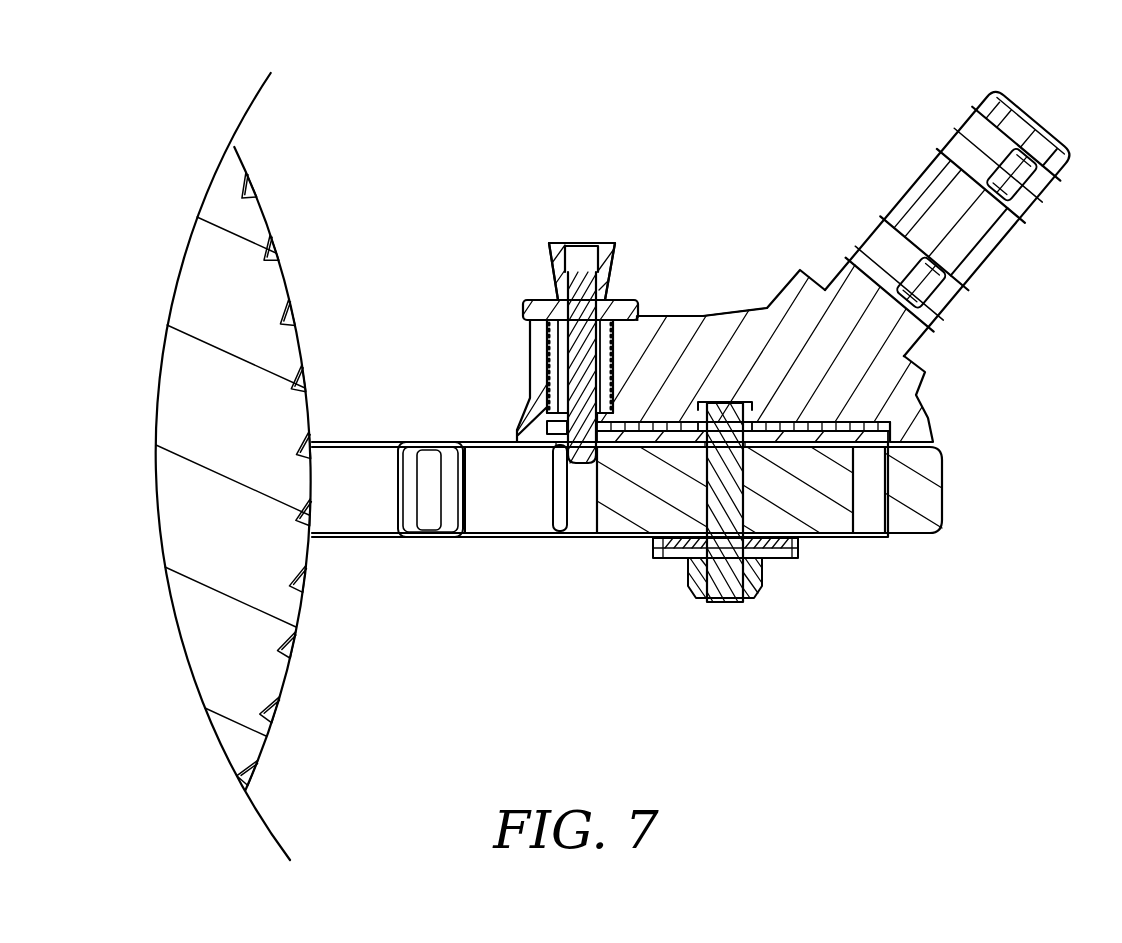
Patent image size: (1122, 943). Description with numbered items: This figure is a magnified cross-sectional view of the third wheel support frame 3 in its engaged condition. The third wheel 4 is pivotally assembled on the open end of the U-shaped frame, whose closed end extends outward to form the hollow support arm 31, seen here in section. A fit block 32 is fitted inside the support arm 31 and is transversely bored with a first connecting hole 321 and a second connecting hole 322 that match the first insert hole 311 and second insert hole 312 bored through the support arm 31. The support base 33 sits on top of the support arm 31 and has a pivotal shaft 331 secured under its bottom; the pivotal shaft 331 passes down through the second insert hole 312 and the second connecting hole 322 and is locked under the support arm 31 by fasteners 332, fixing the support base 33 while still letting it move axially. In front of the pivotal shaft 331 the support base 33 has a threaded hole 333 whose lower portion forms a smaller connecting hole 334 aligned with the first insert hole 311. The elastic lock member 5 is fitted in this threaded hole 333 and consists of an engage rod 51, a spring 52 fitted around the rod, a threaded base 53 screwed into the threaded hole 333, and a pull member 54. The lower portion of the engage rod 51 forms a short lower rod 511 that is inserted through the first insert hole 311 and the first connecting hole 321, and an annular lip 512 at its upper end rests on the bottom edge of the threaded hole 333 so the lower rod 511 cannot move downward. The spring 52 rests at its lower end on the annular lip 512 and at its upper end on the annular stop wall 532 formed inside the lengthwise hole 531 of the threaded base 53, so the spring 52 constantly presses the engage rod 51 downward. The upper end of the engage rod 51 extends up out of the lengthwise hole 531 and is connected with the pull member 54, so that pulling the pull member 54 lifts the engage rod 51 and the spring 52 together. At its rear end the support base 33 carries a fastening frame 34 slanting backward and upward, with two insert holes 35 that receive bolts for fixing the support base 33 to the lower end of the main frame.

The third wheel support frame 3 is at (1010, 317).
The third wheel 4 is at (241, 222).
The elastic lock member 5 is at (557, 220).
The support arm 31 is at (482, 442).
The fit block 32 is at (923, 488).
The support base 33 is at (800, 313).
The fastening frame 34 is at (937, 185).
The insert holes 35 is at (882, 255).
The engage rod 51 is at (575, 355).
The spring 52 is at (550, 330).
The threaded base 53 is at (523, 305).
The pull member 54 is at (593, 250).
The first insert hole 311 is at (560, 447).
The second insert hole 312 is at (723, 448).
The first connecting hole 321 is at (567, 513).
The second connecting hole 322 is at (775, 555).
The pivotal shaft 331 is at (725, 587).
The fasteners 332 is at (762, 572).
The threaded hole 333 is at (528, 395).
The connecting hole 334 is at (550, 443).
The lower rod 511 is at (597, 448).
The annular lip 512 is at (730, 317).
The lengthwise hole 531 is at (557, 282).
The annular stop wall 532 is at (650, 318).